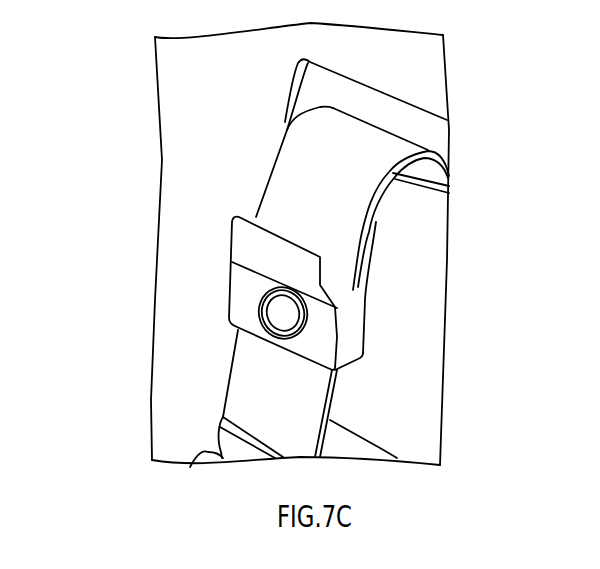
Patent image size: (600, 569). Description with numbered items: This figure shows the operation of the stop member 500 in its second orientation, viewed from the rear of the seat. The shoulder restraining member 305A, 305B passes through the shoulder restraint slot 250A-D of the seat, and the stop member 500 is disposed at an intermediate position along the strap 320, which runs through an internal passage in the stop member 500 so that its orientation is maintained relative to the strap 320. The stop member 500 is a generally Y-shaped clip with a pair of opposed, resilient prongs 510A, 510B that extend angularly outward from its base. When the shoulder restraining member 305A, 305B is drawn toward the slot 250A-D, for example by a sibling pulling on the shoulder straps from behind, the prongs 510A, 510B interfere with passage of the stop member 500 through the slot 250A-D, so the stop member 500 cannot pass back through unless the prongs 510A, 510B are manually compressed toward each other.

The shoulder restraint slot 250A-D is at (266, 84).
The shoulder restraining member 305A is at (279, 162).
The shoulder restraining member 305B is at (393, 162).
The strap 320 is at (372, 158).
The stop member 500 is at (196, 319).
The prong 510A is at (240, 237).
The prong 510B is at (386, 244).